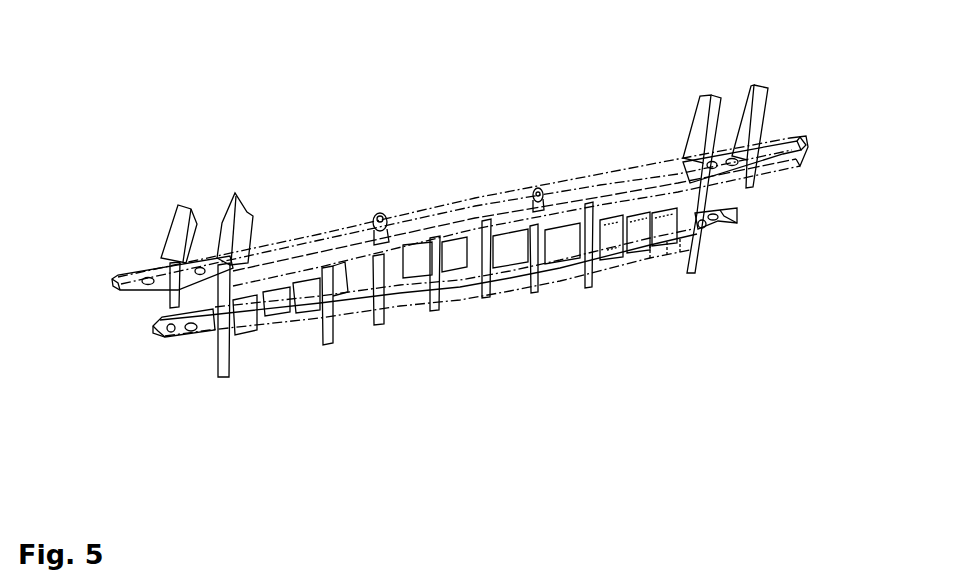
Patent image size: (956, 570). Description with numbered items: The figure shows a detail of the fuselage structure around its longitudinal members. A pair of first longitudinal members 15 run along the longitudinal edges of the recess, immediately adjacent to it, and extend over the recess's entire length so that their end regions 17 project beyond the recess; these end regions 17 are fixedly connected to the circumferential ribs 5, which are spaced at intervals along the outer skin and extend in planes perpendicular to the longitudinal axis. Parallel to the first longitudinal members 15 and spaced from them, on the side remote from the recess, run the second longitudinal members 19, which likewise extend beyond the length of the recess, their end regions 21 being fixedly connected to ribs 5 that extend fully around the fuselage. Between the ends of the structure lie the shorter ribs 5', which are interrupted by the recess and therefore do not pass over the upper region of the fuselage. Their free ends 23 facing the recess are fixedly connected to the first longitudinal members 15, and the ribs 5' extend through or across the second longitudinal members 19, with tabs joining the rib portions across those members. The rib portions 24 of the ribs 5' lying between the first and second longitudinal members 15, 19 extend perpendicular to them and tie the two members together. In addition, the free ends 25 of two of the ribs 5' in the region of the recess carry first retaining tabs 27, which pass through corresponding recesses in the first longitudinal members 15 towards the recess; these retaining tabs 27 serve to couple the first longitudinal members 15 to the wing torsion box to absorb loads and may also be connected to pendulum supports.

The circumferential ribs 5 is at (464, 188).
The ribs interrupted by the recess 5' is at (381, 344).
The first longitudinal members 15 is at (447, 220).
The end regions 17 is at (200, 274).
The second longitudinal members 19 is at (459, 289).
The end regions 21 is at (187, 334).
The free ends 23 is at (330, 277).
The rib portions 24 is at (588, 230).
The free ends 25 is at (383, 253).
The first retaining tabs 27 is at (378, 218).